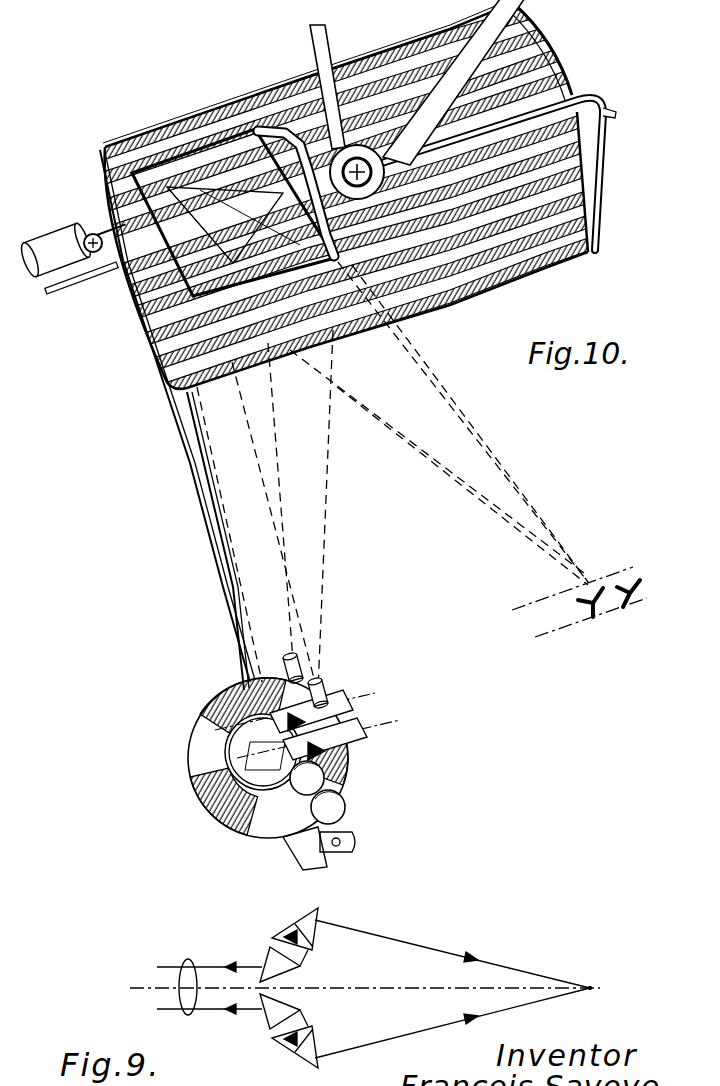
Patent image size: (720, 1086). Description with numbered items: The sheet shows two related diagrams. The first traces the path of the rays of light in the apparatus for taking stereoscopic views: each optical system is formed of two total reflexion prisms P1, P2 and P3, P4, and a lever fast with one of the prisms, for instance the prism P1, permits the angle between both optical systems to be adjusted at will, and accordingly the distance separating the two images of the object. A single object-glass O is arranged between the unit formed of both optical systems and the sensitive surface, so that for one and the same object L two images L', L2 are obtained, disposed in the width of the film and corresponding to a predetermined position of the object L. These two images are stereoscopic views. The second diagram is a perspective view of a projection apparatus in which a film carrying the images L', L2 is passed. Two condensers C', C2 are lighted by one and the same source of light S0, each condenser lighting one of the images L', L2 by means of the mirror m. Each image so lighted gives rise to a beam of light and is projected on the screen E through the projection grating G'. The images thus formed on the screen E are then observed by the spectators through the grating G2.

In FIG. 10, the grating G2 is at (556, 262).
In FIG. 10, the screen E is at (133, 318).
In FIG. 10, the projection grating G' is at (177, 420).
In FIG. 10, the image L' is at (332, 692).
In FIG. 10, the image L2 is at (368, 724).
In FIG. 10, the condenser C2 is at (345, 810).
In FIG. 10, the source of light S0 is at (358, 843).
In FIG. 10, the mirror m is at (328, 867).
In FIG. 10, the condenser C' is at (263, 793).
In FIG. 9, the object-glass O is at (193, 1012).
In FIG. 9, the object L is at (460, 989).
In FIG. 9, the total reflexion prism P1 is at (310, 1063).
In FIG. 9, the total reflexion prism P2 is at (317, 920).
In FIG. 9, the total reflexion prism P3 is at (307, 1018).
In FIG. 9, the total reflexion prism P4 is at (303, 962).